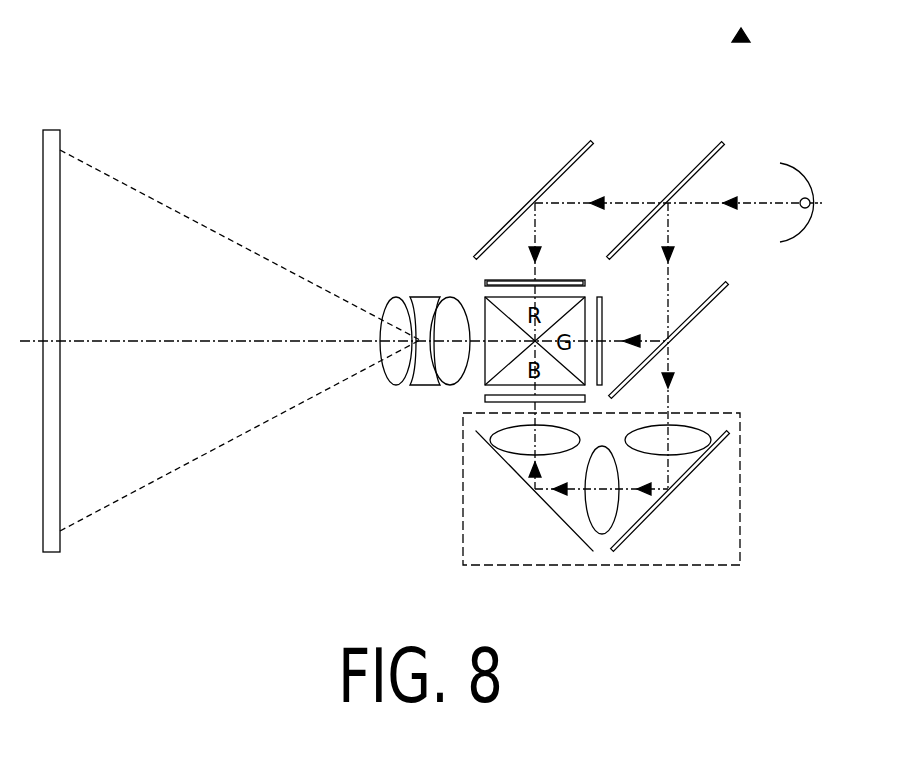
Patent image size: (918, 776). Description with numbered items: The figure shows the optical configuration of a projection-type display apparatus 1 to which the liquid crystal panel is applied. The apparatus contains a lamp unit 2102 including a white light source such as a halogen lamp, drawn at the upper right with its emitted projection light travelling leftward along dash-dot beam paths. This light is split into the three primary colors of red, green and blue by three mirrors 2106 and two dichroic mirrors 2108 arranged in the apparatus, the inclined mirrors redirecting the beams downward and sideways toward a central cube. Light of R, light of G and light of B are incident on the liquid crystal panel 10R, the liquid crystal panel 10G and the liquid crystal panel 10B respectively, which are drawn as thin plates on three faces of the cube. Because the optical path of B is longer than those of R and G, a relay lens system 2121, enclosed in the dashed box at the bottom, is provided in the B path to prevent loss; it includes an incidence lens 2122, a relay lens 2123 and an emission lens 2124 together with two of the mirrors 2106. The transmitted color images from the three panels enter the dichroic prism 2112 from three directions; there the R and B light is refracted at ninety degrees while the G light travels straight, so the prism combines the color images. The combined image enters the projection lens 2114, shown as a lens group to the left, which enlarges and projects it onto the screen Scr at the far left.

The projection-type display apparatus 1 is at (750, 34).
The screen Scr is at (62, 543).
The lamp unit 2102 is at (805, 197).
The mirrors 2106 is at (565, 165).
The dichroic mirrors 2108 is at (697, 170).
The dichroic prism 2112 is at (497, 281).
The projection lens 2114 is at (470, 287).
The relay lens system 2121 is at (742, 470).
The incidence lens 2122 is at (689, 452).
The relay lens 2123 is at (610, 518).
The emission lens 2124 is at (511, 452).
The liquid crystal panel 10R is at (518, 281).
The liquid crystal panel 10G is at (633, 294).
The liquid crystal panel 10B is at (485, 398).